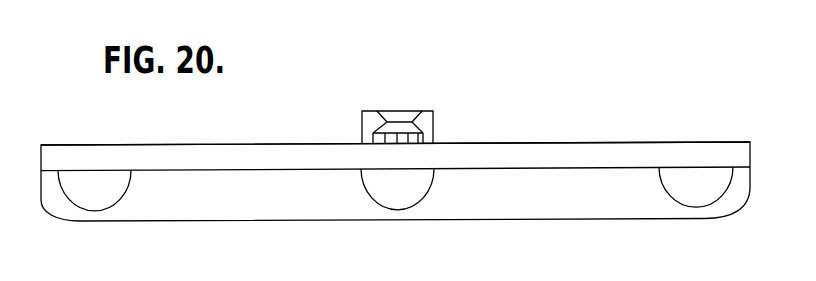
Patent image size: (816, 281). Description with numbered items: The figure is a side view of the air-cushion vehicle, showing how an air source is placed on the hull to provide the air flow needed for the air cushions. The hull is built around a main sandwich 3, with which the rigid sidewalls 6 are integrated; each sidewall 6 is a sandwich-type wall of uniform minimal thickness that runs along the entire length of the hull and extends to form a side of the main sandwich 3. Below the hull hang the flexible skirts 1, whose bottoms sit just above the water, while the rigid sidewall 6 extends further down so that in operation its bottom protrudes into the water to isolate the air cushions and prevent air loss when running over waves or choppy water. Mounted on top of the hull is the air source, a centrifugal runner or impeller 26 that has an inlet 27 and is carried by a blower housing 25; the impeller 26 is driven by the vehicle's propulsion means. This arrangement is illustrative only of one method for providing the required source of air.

The flexible skirt 1 is at (395, 189).
The main sandwich 3 is at (395, 156).
The rigid sidewall 6 is at (43, 203).
The blower housing 25 is at (433, 128).
The centrifugal runner or impeller 26 is at (374, 127).
The inlet 27 is at (414, 118).